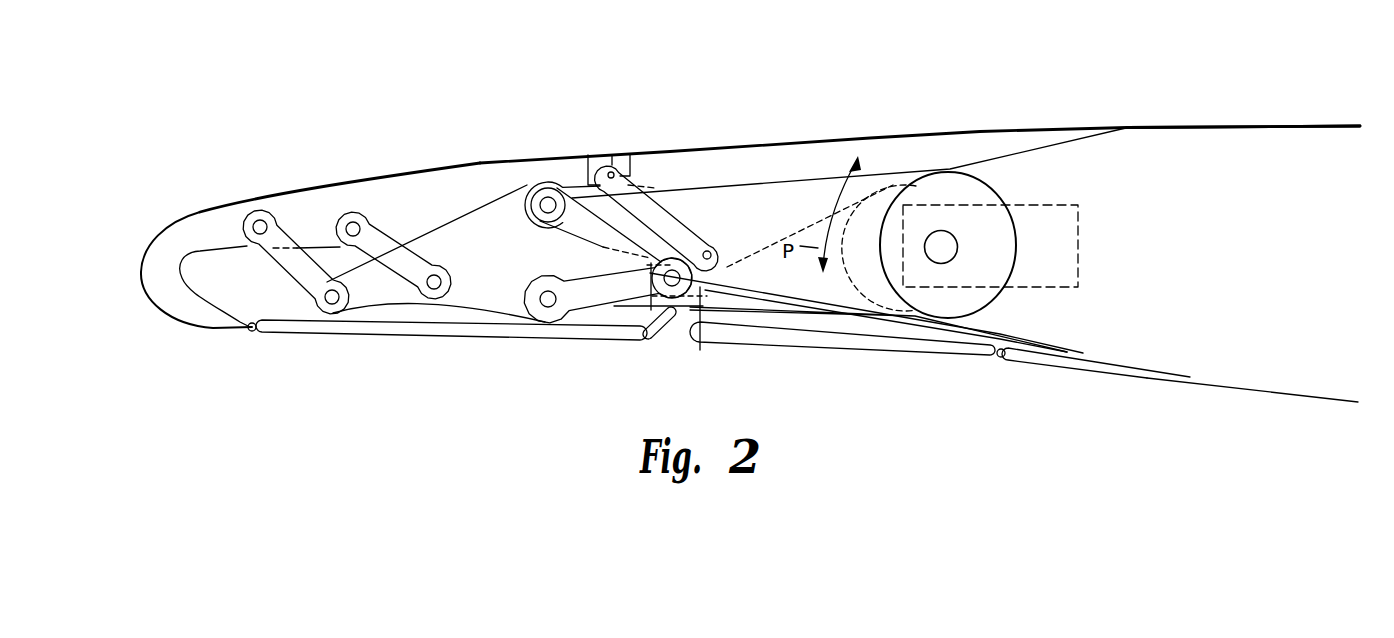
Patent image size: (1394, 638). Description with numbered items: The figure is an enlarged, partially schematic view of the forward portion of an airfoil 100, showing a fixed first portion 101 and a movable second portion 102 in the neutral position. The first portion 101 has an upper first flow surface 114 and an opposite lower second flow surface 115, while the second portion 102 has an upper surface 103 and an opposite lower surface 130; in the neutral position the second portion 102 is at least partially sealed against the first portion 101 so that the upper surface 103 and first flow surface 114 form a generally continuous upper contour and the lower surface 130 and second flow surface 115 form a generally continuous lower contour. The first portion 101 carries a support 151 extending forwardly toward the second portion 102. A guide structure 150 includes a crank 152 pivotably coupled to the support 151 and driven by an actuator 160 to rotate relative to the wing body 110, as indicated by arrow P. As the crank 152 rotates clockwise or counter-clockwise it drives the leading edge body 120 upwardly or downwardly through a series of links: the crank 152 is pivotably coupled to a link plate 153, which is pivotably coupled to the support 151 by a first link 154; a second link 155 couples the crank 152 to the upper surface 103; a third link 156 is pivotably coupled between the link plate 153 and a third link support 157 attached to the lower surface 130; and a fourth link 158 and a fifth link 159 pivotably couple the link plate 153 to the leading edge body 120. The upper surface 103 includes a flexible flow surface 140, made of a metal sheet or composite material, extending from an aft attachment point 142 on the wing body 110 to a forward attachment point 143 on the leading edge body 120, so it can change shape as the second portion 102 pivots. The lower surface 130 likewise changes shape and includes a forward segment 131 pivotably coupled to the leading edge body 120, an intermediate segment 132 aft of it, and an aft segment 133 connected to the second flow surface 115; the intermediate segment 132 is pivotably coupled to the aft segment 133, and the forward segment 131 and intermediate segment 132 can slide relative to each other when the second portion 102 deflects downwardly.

The airfoil 100 is at (950, 45).
The first portion 101 is at (1257, 117).
The second portion 102 is at (192, 145).
The upper surface 103 is at (250, 198).
The wing body 110 is at (1268, 202).
The first flow surface 114 is at (1222, 125).
The second flow surface 115 is at (1287, 397).
The leading edge body 120 is at (137, 273).
The lower surface 130 is at (484, 343).
The forward segment 131 is at (280, 337).
The intermediate segment 132 is at (790, 348).
The aft segment 133 is at (1153, 380).
The flexible flow surface 140 is at (847, 138).
The aft attachment point 142 is at (1155, 127).
The forward attachment point 143 is at (198, 215).
The guide structure 150 is at (428, 312).
The support 151 is at (1018, 175).
The crank 152 is at (770, 212).
The link plate 153 is at (495, 220).
The first link 154 is at (614, 308).
The second link 155 is at (657, 213).
The third link 156 is at (570, 240).
The third link support 157 is at (700, 290).
The fourth link 158 is at (387, 238).
The fifth link 159 is at (273, 230).
The actuator 160 is at (1080, 253).